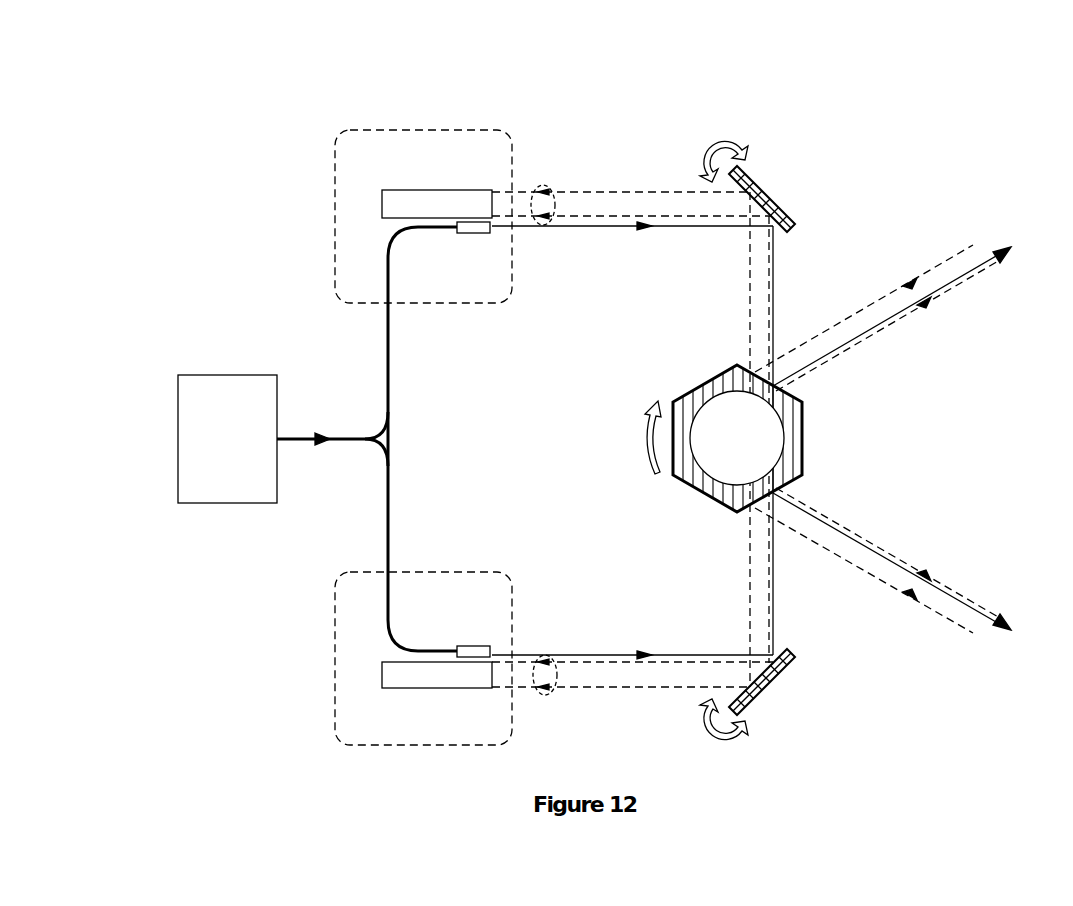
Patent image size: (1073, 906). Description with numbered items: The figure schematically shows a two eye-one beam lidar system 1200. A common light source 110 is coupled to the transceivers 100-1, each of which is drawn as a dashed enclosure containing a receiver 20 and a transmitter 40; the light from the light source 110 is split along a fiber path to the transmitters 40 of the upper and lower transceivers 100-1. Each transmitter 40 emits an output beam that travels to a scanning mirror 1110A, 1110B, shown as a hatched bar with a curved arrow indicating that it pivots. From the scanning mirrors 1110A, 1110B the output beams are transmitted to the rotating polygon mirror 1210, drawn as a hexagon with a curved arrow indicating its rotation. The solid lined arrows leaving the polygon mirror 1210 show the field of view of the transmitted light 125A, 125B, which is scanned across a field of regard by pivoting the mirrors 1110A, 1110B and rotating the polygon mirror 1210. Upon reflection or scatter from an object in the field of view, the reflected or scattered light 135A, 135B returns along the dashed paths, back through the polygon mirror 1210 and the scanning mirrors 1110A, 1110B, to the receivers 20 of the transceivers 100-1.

The lidar system 1200 is at (620, 56).
The left-eye transceiver 100-1 is at (335, 657).
The receiver 20 is at (432, 722).
The transmitter 40 is at (471, 651).
The light source 110 is at (212, 473).
The reflected/scattered light 135A is at (549, 187).
The reflected/scattered light 135B is at (549, 695).
The scanning mirror 1110A is at (785, 217).
The scanning mirror 1110B is at (786, 667).
The rotating polygon mirror 1210 is at (706, 388).
The transmitted light 125A is at (1000, 259).
The transmitted light 125B is at (997, 619).